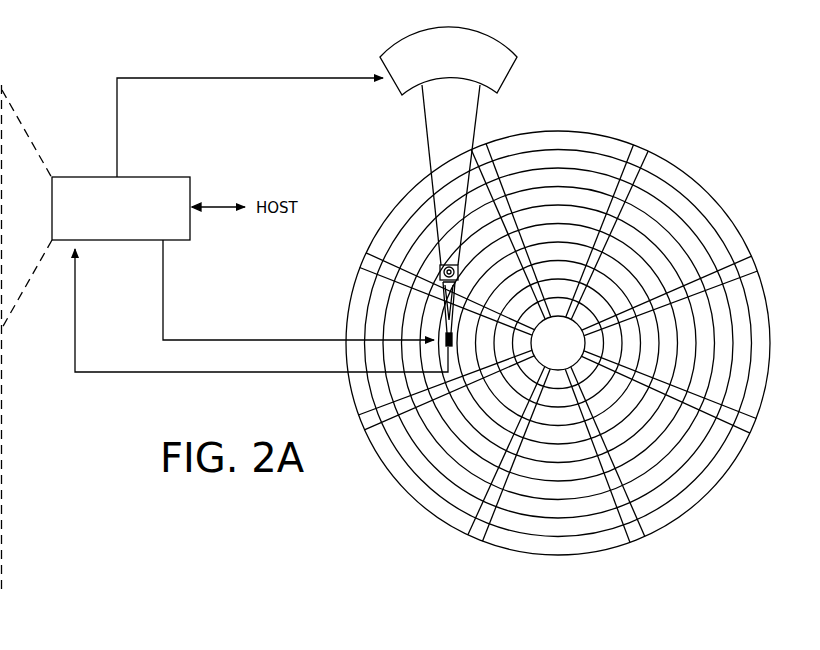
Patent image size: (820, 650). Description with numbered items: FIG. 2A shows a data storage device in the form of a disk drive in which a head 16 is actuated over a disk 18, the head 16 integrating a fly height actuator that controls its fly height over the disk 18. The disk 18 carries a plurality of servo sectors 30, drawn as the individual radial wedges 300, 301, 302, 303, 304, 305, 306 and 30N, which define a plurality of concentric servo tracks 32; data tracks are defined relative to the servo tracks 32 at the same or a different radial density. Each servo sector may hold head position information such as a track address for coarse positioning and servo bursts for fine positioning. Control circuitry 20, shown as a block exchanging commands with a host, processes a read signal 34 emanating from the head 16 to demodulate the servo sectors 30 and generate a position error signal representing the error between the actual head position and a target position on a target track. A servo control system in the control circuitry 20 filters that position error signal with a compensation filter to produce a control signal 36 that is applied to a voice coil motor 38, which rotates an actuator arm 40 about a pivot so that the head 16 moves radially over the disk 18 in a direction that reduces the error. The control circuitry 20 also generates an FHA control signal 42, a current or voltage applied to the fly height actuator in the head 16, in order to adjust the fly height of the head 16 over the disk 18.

The head 16 is at (462, 332).
The disk 18 is at (559, 339).
The control circuitry 20 is at (156, 176).
The servo sectors 30 is at (559, 353).
The servo sector 300 is at (641, 153).
The servo sector 301 is at (750, 266).
The servo sector 302 is at (748, 428).
The servo sector 303 is at (633, 538).
The servo sector 304 is at (475, 532).
The servo sector 305 is at (365, 424).
The servo sector 306 is at (365, 260).
The servo sector 30N is at (479, 152).
The servo tracks 32 is at (560, 157).
The read signal 34 is at (212, 374).
The control signal 36 is at (117, 131).
The voice coil motor 38 is at (398, 85).
The actuator arm 40 is at (430, 160).
The FHA control signal 42 is at (163, 288).